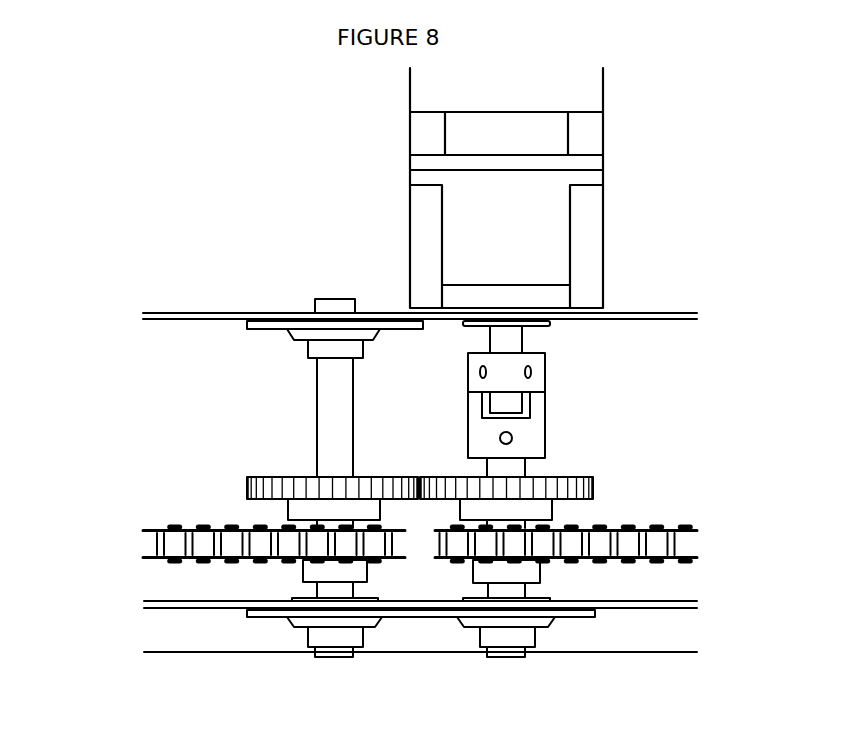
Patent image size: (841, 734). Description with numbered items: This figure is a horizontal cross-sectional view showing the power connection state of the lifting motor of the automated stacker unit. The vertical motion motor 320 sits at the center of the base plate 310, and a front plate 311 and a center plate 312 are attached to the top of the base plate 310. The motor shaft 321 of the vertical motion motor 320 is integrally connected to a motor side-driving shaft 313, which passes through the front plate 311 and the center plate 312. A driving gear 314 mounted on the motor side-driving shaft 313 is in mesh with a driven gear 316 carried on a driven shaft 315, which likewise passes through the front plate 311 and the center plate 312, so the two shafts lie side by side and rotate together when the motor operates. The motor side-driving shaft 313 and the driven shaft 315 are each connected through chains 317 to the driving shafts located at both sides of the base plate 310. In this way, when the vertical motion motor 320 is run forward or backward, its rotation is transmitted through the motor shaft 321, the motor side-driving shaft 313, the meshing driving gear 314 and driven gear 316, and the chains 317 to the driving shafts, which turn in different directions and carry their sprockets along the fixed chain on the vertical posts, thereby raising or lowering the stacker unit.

The base plate 310 is at (632, 640).
The front plate 311 is at (197, 605).
The center plate 312 is at (185, 314).
The motor side-driving shaft 313 is at (517, 466).
The driving gear 314 is at (593, 488).
The driven shaft 315 is at (340, 410).
The driven gear 316 is at (288, 485).
The chains 317 is at (157, 543).
The vertical motion motor 320 is at (535, 197).
The motor shaft 321 is at (512, 340).